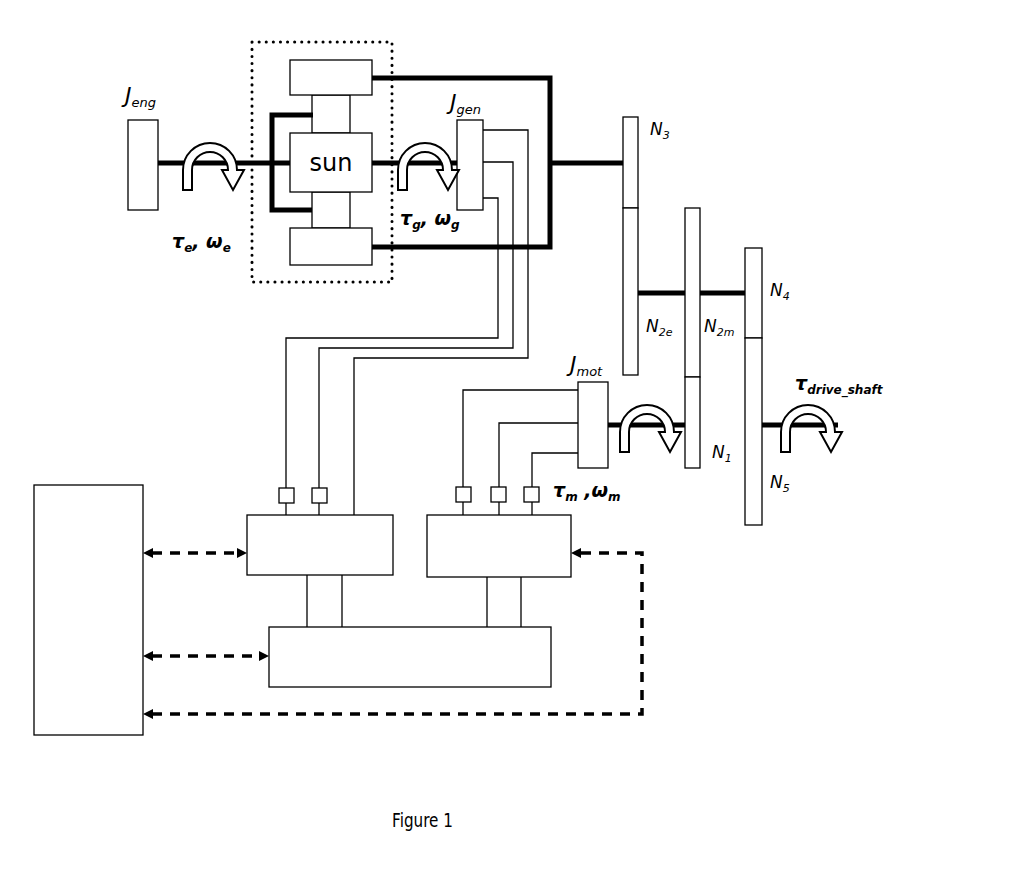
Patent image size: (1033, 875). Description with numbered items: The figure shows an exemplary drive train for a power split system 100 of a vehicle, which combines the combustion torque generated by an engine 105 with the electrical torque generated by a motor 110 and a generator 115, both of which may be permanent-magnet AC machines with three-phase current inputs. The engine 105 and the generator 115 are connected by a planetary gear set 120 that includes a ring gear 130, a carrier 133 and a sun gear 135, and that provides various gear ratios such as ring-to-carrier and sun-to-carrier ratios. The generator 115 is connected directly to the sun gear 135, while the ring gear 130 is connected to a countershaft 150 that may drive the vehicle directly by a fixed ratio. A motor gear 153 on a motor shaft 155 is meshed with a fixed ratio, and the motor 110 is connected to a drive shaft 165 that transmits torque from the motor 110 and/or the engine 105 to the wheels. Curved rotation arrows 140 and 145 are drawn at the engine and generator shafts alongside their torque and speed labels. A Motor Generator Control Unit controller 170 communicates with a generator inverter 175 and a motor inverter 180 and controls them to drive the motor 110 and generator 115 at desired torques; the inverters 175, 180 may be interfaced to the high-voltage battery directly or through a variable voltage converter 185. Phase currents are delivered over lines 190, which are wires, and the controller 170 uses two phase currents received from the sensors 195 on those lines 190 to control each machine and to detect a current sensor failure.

The power split system 100 is at (710, 83).
The engine 105 is at (130, 195).
The motor 110 is at (602, 463).
The generator 115 is at (483, 125).
The planetary gear set 120 is at (384, 48).
The ring gear 130 is at (368, 70).
The carrier 133 is at (320, 110).
The sun gear 135 is at (296, 183).
The engine rotation direction arrow 140 is at (173, 157).
The generator rotation direction arrow 145 is at (418, 167).
The countershaft 150 is at (554, 80).
The motor gear 153 is at (692, 441).
The motor shaft 155 is at (666, 442).
The drive shaft 165 is at (792, 440).
The controller 170 is at (62, 493).
The generator inverter 175 is at (264, 567).
The motor inverter 180 is at (455, 560).
The variable voltage converter 185 is at (535, 660).
The line 190 is at (354, 412).
The phase current sensor 195 is at (317, 492).